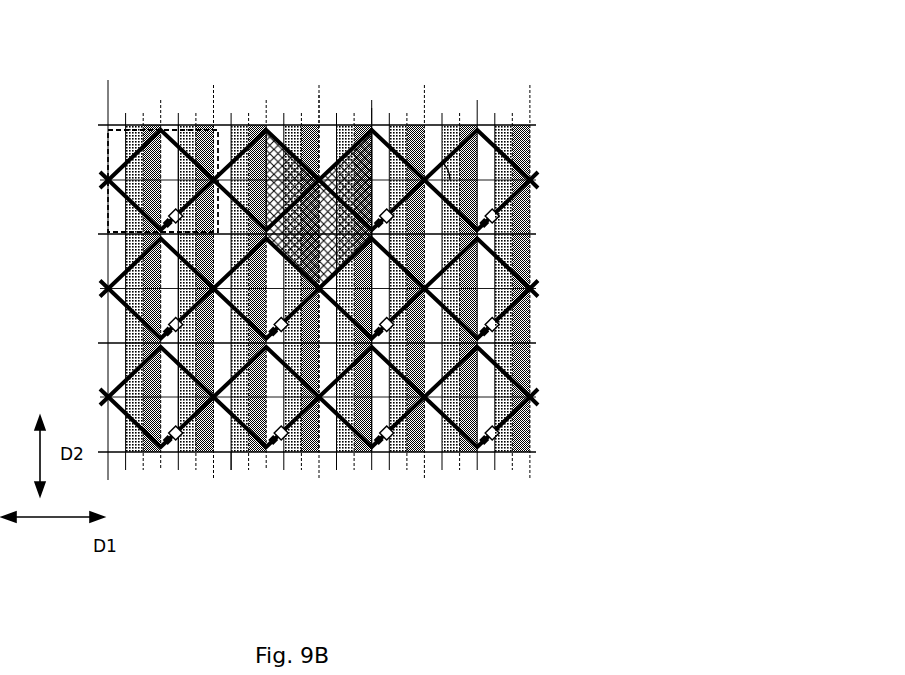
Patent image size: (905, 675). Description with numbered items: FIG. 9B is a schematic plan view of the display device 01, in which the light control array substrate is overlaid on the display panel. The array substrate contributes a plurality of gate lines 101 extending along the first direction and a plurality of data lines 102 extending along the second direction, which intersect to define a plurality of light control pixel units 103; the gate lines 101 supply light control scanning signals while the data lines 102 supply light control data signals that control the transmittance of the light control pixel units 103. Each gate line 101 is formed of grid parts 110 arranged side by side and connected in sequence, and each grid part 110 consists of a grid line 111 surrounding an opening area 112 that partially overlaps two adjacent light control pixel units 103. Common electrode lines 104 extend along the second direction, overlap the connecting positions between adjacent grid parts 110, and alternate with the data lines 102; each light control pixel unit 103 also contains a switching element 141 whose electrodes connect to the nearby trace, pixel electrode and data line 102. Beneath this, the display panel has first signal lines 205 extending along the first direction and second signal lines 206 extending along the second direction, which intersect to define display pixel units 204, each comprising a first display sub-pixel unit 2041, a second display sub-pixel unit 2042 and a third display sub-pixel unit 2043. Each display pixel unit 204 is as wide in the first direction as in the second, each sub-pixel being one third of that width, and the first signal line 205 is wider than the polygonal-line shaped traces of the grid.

The display device 01 is at (310, 321).
The gate line 101 is at (124, 181).
The data line 102 is at (372, 108).
The light control pixel unit 103 is at (284, 125).
The common electrode line 104 is at (319, 95).
The grid part 110 is at (123, 125).
The grid line 111 is at (173, 125).
The opening area 112 is at (196, 125).
The switching element 141 is at (168, 450).
The display pixel unit 204 is at (497, 372).
The first display sub-pixel unit 2041 is at (487, 447).
The second display sub-pixel unit 2042 is at (502, 442).
The third display sub-pixel unit 2043 is at (520, 443).
The first signal line 205 is at (533, 343).
The second signal line 206 is at (232, 458).